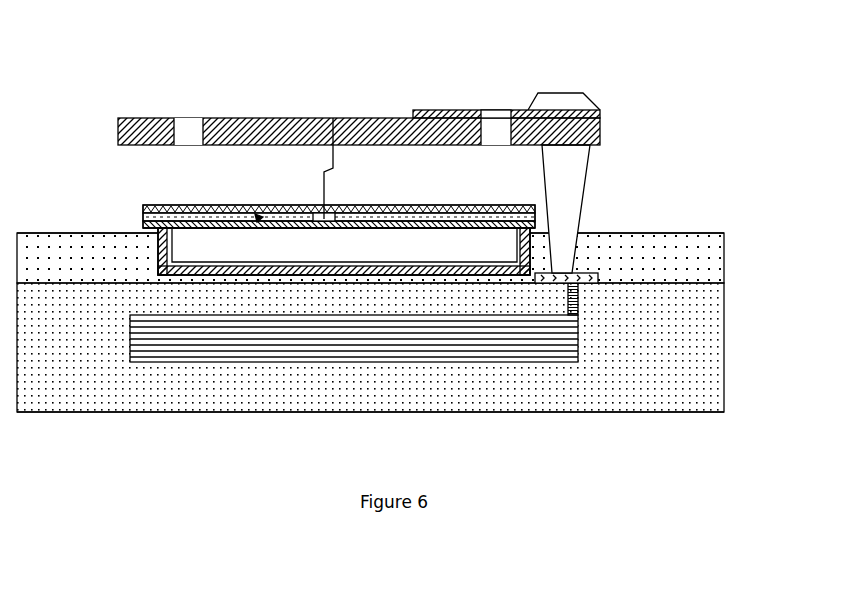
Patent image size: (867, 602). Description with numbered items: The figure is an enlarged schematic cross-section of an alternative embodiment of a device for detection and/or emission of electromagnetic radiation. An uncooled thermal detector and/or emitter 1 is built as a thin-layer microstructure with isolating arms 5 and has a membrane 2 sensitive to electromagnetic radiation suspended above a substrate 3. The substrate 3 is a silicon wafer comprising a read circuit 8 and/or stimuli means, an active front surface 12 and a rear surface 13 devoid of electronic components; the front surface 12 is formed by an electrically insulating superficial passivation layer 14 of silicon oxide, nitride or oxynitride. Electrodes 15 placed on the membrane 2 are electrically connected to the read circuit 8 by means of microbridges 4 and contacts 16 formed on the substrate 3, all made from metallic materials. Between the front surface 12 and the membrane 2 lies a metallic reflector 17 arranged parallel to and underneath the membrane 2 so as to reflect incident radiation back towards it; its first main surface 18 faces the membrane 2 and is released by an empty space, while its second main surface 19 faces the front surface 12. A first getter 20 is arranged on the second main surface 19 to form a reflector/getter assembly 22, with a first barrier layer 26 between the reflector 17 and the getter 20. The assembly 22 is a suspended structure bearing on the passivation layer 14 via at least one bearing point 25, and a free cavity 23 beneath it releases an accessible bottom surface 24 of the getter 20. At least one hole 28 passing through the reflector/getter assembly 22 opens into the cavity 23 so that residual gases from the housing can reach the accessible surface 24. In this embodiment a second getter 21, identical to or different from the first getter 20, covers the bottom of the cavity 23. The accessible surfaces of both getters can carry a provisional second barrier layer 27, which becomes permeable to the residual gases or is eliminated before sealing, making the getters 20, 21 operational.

The uncooled thermal detector and/or emitter 1 is at (176, 111).
The membrane 2 is at (300, 118).
The substrate 3 is at (703, 309).
The microbridge 4 is at (575, 163).
The isolating arm 5 is at (190, 128).
The read circuit 8 is at (540, 345).
The front surface 12 is at (620, 233).
The rear surface 13 is at (657, 412).
The superficial passivation layer 14 is at (690, 233).
The electrodes 15 is at (463, 108).
The contacts 16 is at (582, 278).
The reflector 17 is at (227, 205).
The first main surface 18 is at (158, 203).
The second main surface 19 is at (180, 228).
The first getter 20 is at (420, 205).
The second getter 21 is at (465, 268).
The reflector/getter assembly 22 is at (260, 218).
The cavity 23 is at (355, 258).
The accessible surface 24 is at (398, 228).
The bearing point 25 is at (152, 240).
The first barrier layer 26 is at (477, 205).
The second barrier layer 27 is at (362, 205).
The hole 28 is at (333, 118).